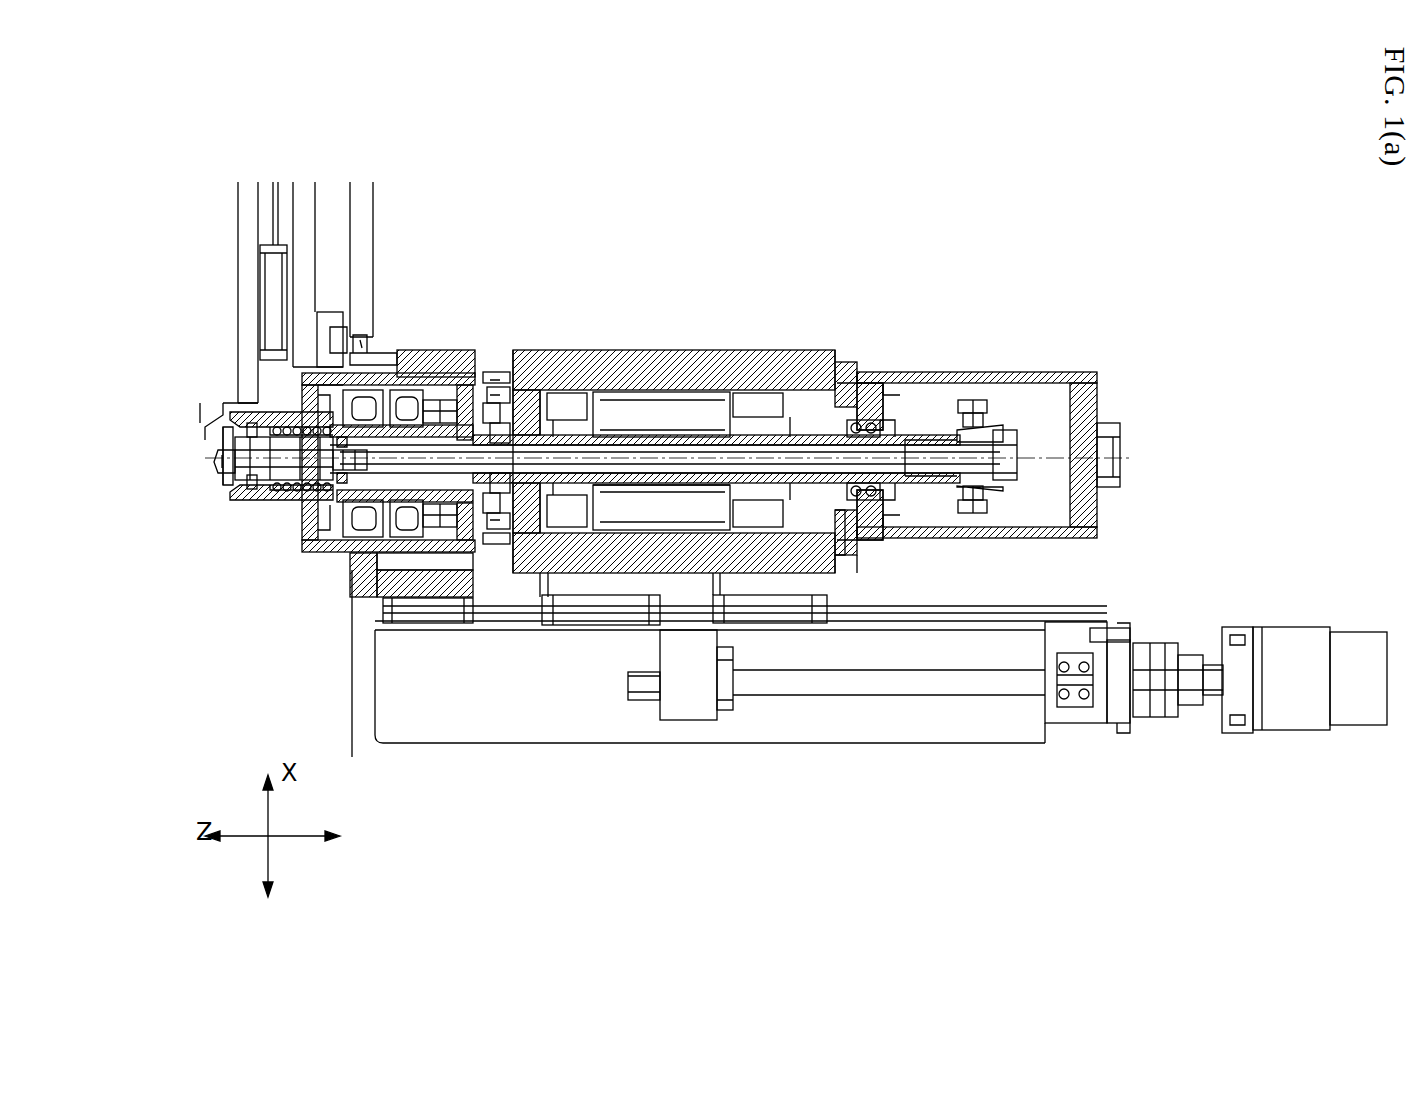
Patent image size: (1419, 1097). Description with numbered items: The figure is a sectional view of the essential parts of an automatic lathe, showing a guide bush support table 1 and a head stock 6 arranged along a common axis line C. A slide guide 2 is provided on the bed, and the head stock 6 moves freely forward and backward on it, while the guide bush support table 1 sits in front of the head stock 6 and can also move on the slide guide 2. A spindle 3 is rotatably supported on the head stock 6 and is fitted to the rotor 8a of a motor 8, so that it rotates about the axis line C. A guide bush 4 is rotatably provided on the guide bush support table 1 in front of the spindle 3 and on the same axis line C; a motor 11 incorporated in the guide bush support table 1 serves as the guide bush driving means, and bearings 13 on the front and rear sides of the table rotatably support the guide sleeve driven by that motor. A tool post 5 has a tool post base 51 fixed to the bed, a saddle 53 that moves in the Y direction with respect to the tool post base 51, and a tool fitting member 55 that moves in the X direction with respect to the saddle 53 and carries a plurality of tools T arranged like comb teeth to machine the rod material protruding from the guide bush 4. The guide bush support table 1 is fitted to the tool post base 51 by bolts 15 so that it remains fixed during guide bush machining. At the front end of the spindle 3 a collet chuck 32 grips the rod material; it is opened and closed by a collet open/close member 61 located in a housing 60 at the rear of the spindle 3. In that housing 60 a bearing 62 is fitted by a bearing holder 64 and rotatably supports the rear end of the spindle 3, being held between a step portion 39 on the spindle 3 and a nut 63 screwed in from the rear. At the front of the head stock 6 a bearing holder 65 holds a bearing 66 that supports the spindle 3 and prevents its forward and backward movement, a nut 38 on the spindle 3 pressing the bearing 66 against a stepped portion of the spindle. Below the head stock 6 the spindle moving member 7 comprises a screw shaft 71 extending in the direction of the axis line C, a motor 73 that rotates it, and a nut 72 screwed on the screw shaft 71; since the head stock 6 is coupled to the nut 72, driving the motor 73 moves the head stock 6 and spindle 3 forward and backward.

The guide bush support table 1 is at (462, 348).
The slide guide 2 is at (510, 628).
The spindle 3 is at (580, 430).
The guide bush 4 is at (213, 482).
The tool post 5 is at (310, 284).
The head stock 6 is at (640, 348).
The spindle moving member 7 is at (1078, 742).
The motor 8 is at (658, 383).
The rotor 8a is at (640, 497).
The motor 11 is at (400, 383).
The bearing 13 is at (290, 513).
The bolt 15 is at (377, 350).
The collet chuck 32 is at (302, 540).
The nut 38 is at (430, 545).
The step portion 39 is at (845, 545).
The tool post base 51 is at (360, 235).
The saddle 53 is at (307, 208).
The tool fitting member 55 is at (242, 307).
The housing 60 is at (937, 370).
The collet open/close member 61 is at (997, 415).
The bearing 62 is at (825, 377).
The nut 63 is at (907, 497).
The bearing holder 64 is at (847, 363).
The bearing holder 65 is at (495, 380).
The bearing 66 is at (546, 392).
The screw shaft 71 is at (831, 690).
The nut 72 is at (697, 712).
The motor 73 is at (1262, 708).
The axis line C is at (707, 457).
The tool T is at (213, 455).